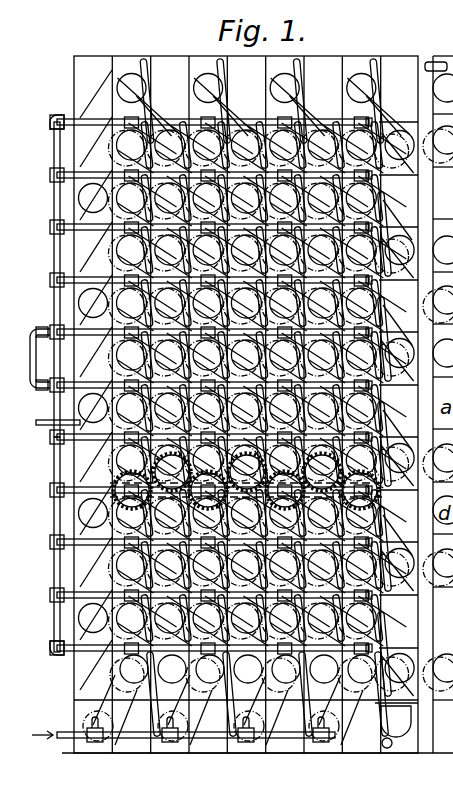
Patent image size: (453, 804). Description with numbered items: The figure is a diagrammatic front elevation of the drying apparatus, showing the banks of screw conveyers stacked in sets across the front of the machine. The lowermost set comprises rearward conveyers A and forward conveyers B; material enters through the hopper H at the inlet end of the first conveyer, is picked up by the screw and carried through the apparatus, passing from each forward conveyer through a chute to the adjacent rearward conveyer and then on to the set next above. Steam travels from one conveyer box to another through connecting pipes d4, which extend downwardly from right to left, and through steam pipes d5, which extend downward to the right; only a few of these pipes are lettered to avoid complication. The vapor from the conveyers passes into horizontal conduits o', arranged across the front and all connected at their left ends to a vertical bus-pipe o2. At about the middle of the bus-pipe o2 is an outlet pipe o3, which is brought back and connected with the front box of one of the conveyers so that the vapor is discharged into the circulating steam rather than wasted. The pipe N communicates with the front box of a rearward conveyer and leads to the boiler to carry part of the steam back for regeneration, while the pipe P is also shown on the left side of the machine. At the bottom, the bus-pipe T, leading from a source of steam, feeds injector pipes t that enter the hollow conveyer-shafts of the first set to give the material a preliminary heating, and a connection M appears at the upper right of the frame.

The horizontal conduit o' is at (225, 434).
The vertical conduit or bus-pipe o2 is at (76, 300).
The outlet pipe o3 is at (32, 362).
The pipe N is at (44, 427).
The pipe P is at (44, 544).
The connecting pipe d4 is at (116, 472).
The steam pipe d5 is at (378, 424).
The rearward conveyer A is at (82, 717).
The forward conveyer B is at (243, 673).
The hopper H is at (396, 720).
The conduit or bus-pipe T is at (130, 738).
The injector pipe t is at (166, 742).
The pipe connection M is at (432, 62).